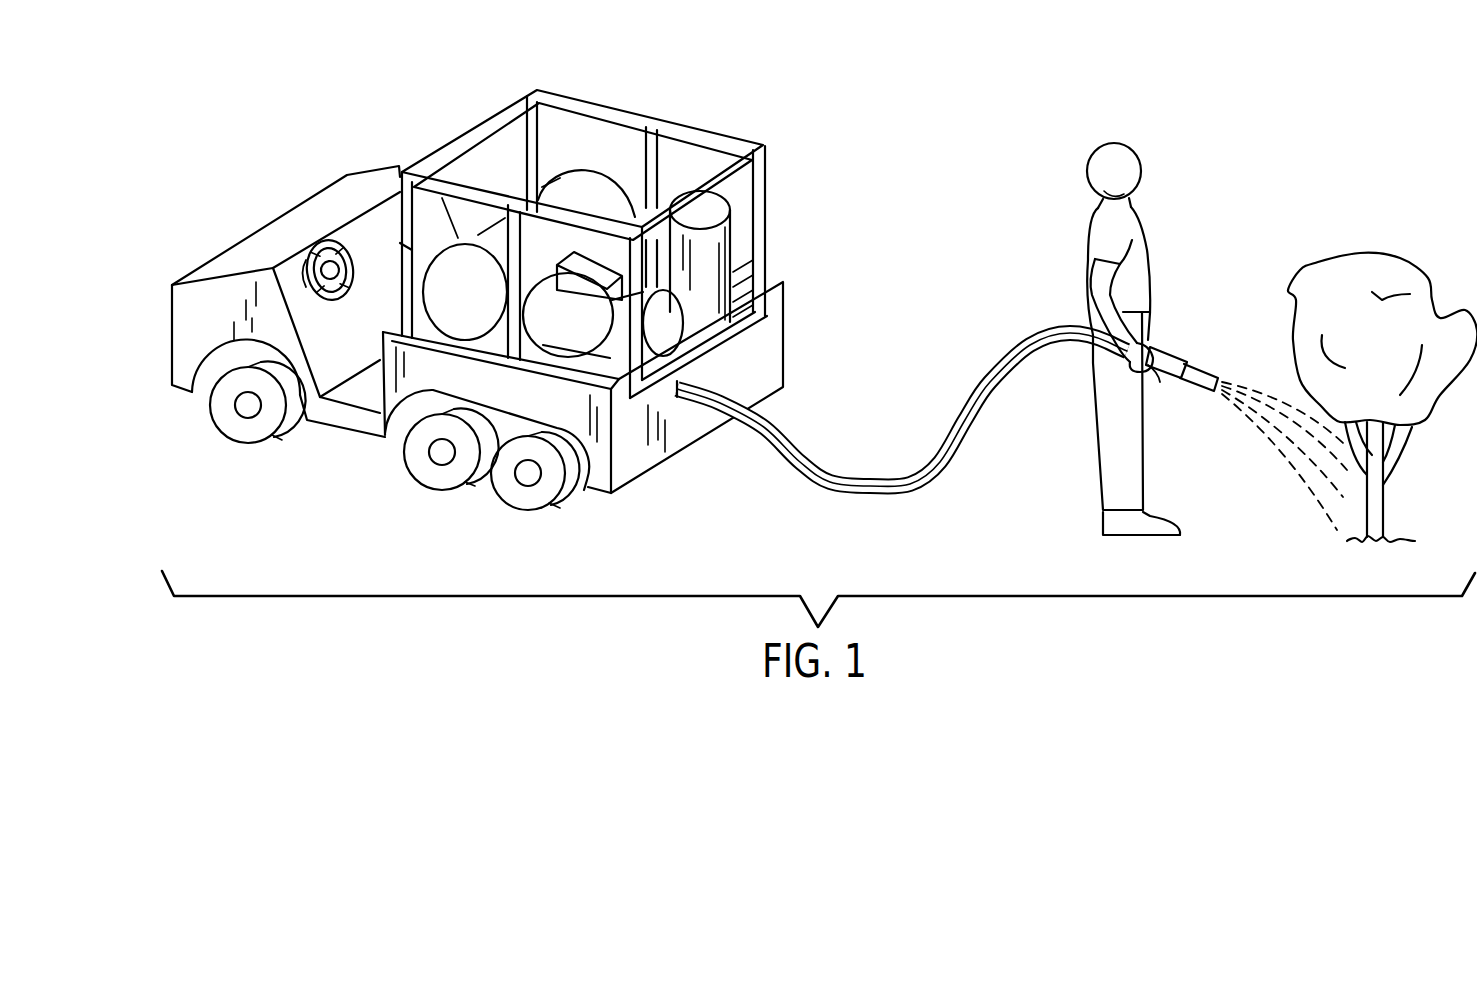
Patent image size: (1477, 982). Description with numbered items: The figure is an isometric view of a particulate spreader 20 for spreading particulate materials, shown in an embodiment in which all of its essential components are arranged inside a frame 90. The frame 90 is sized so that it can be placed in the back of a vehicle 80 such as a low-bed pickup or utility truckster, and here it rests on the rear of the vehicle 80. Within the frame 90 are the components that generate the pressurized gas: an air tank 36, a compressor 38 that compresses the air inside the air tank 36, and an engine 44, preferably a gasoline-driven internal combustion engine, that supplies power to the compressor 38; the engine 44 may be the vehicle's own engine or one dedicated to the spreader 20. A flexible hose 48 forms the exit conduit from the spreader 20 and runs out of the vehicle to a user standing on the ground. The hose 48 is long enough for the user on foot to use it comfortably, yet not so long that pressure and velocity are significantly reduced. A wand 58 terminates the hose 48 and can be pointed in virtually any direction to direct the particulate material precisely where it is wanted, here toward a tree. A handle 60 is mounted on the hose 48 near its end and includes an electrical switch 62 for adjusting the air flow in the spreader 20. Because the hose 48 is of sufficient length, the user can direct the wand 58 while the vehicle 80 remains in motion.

The particulate spreader 20 is at (690, 76).
The vehicle 80 is at (212, 292).
The frame 90 is at (765, 182).
The air tank 36 is at (440, 267).
The compressor 38 is at (704, 265).
The engine 44 is at (654, 357).
The hose 48 is at (864, 478).
The electrical switch 62 is at (1163, 353).
The wand 58 is at (1200, 370).
The handle 60 is at (1165, 388).